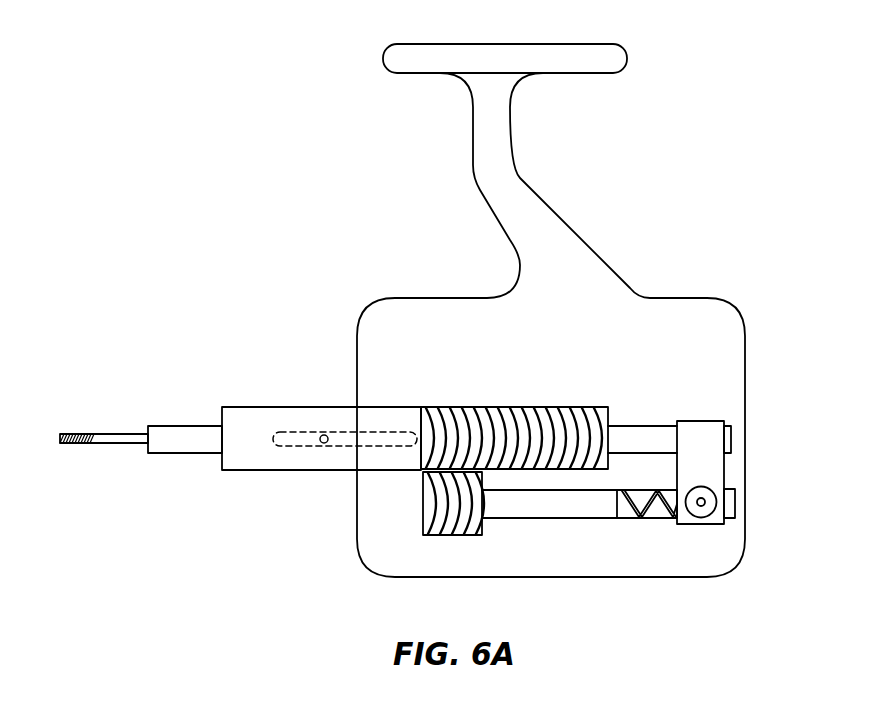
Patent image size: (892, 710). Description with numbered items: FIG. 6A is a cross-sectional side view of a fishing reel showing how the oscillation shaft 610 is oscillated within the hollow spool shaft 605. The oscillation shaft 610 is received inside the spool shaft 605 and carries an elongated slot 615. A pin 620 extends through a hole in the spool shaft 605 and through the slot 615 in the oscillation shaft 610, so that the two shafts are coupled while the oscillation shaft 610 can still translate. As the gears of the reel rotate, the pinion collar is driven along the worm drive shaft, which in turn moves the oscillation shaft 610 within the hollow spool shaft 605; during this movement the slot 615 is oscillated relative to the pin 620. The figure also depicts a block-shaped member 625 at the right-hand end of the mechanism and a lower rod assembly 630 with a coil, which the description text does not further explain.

The spool shaft 605 is at (287, 405).
The oscillation shaft 610 is at (167, 425).
The slot 615 is at (387, 437).
The pin 620 is at (322, 444).
The actuator block 625 is at (715, 482).
The spring-loaded rod 630 is at (587, 508).